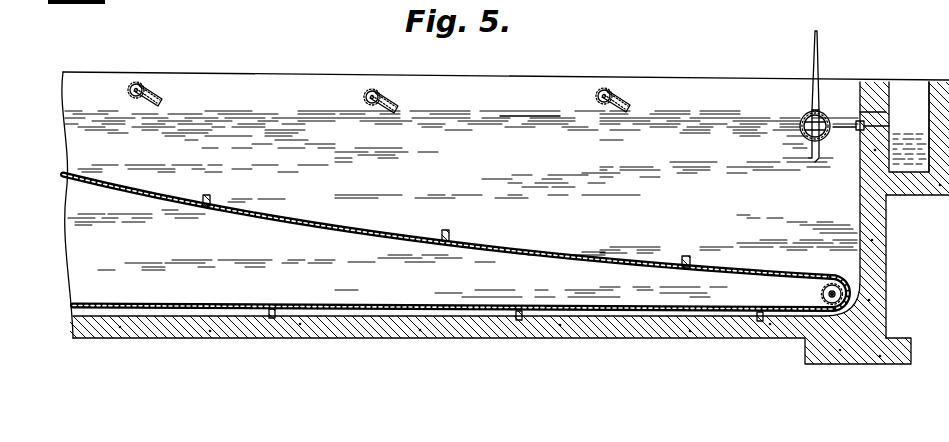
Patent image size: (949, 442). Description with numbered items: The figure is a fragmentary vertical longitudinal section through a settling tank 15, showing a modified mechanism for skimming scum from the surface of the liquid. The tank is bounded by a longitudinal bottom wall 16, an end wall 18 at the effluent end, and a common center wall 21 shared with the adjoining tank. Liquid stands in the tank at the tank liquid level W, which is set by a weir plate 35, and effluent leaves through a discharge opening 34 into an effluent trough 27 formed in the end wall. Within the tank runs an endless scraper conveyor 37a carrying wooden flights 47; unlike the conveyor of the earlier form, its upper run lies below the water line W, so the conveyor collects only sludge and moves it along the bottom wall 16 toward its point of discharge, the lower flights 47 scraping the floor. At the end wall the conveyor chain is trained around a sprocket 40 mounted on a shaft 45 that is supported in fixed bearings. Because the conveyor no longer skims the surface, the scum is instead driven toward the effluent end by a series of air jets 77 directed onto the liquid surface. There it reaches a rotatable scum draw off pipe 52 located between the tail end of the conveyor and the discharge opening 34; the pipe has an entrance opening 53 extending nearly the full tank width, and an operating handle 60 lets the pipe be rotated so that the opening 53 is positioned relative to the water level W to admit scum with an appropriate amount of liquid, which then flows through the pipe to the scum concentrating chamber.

The settling tank 15 is at (560, 237).
The bottom wall 16 is at (518, 324).
The end wall 18 is at (884, 264).
The center wall 21 is at (478, 88).
The effluent trough 27 is at (912, 94).
The discharge opening 34 is at (887, 127).
The weir plate 35 is at (856, 131).
The scraper conveyor 37a is at (476, 246).
The sprocket 40 is at (825, 294).
The shaft 45 is at (831, 278).
The wooden flights 47 is at (684, 257).
The scum draw off pipe 52 is at (801, 118).
The opening 53 is at (822, 113).
The operating handle 60 is at (813, 60).
The air jets 77 is at (152, 97).
The tank liquid level W is at (518, 116).